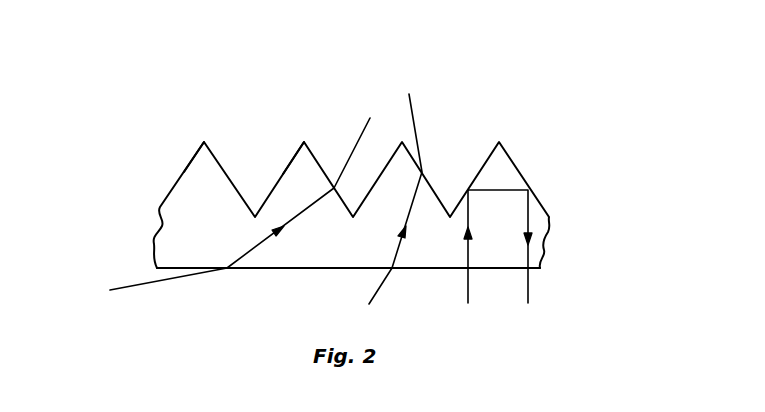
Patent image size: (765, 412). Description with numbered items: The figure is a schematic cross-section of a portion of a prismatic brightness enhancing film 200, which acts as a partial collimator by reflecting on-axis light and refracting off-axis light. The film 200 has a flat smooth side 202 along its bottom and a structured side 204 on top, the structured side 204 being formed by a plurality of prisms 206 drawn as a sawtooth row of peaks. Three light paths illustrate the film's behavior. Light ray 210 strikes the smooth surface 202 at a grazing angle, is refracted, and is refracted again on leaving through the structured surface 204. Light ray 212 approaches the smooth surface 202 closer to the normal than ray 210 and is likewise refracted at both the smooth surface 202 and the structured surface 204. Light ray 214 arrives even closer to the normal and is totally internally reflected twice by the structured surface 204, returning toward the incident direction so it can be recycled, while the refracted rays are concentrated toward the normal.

The prismatic brightness enhancing film 200 is at (158, 108).
The smooth side 202 is at (260, 270).
The structured side 204 is at (185, 172).
The prisms 206 is at (279, 150).
The light ray 210 is at (133, 283).
The light ray 212 is at (381, 285).
The light ray 214 is at (468, 287).